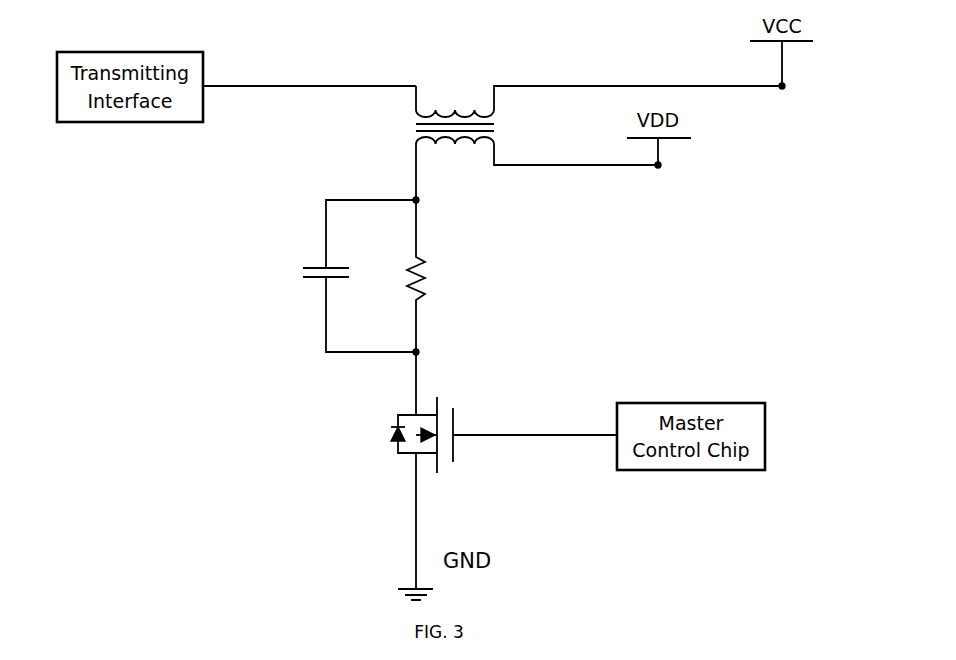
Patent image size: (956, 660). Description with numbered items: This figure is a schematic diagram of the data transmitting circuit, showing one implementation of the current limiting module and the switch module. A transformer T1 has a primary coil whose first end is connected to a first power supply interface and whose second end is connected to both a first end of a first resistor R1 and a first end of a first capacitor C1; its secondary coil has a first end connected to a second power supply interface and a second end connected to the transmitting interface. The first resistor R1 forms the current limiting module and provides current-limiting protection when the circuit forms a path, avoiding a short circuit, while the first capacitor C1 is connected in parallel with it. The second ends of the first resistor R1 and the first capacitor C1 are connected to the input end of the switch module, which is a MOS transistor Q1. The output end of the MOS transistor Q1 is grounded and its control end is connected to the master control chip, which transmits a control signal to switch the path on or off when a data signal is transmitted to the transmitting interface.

The transformer T1 is at (582, 143).
The first capacitor C1 is at (343, 276).
The first resistor R1 is at (398, 276).
The MOS transistor Q1 is at (486, 470).